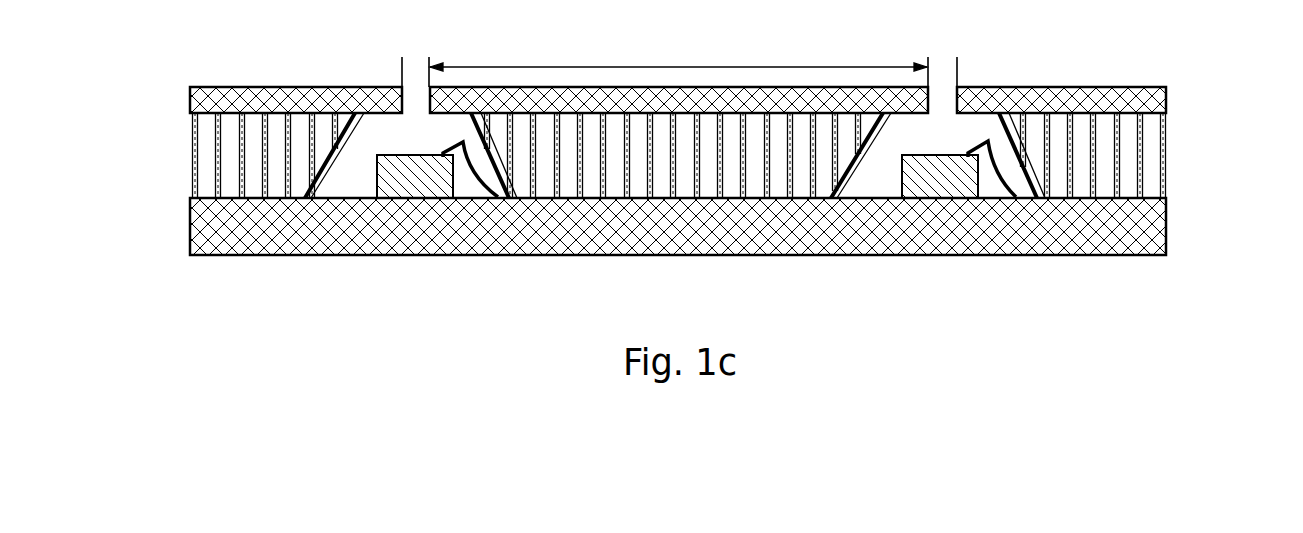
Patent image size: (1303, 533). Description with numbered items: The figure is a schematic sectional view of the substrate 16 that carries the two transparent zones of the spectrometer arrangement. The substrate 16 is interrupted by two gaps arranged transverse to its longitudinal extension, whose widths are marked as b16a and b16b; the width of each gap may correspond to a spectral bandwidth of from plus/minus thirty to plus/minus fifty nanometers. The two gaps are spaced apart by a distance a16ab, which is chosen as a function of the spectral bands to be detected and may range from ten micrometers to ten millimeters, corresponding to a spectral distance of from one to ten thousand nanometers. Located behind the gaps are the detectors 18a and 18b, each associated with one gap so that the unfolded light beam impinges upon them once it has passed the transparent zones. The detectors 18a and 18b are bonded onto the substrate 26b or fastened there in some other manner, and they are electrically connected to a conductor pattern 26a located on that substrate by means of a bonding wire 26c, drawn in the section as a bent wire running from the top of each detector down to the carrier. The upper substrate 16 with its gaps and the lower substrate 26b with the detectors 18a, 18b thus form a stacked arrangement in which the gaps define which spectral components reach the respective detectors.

The substrate 16 is at (1110, 86).
The width of gap 16a b16a is at (429, 50).
The width of gap 16b b16b is at (957, 50).
The distance between the gaps a16ab is at (678, 54).
The conductor pattern 26a is at (1167, 137).
The substrate carrying the detectors 26b is at (1152, 178).
The bonding wire 26c is at (475, 178).
The first detector 18a is at (412, 178).
The second detector 18b is at (938, 180).